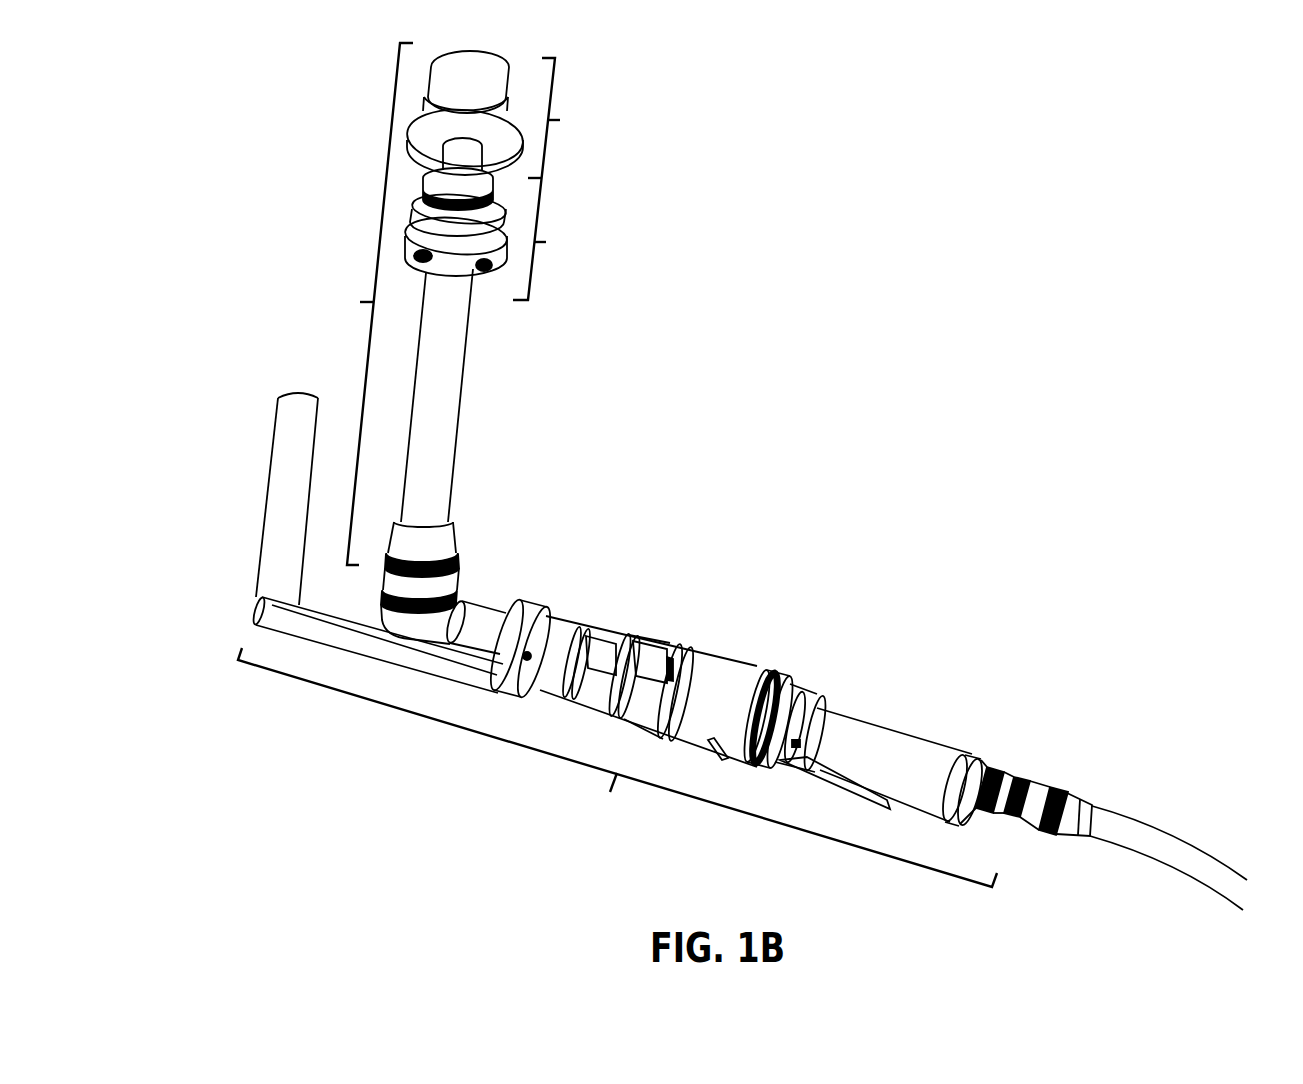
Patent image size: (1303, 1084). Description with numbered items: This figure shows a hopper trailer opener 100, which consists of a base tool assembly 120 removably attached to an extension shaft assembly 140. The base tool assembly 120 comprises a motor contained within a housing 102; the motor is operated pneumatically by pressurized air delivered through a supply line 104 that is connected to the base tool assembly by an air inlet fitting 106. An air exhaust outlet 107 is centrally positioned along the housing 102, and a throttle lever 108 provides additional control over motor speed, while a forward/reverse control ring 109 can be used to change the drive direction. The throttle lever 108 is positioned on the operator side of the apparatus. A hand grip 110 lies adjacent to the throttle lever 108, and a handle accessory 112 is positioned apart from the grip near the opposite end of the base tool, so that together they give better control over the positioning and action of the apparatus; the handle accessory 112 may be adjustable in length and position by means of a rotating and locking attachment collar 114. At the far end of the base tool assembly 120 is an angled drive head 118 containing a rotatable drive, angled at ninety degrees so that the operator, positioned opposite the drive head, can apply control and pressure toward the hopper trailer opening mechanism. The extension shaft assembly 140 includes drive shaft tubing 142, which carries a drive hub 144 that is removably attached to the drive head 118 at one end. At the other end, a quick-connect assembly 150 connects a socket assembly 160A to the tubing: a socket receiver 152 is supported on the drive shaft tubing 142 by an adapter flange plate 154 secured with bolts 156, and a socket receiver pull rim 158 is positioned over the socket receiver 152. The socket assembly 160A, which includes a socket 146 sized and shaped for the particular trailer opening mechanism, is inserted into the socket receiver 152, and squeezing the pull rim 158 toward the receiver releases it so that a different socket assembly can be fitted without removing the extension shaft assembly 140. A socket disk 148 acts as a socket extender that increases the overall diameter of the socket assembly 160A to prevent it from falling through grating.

The hopper trailer opener 100 is at (1066, 250).
The housing 102 is at (705, 652).
The supply line 104 is at (1188, 850).
The air inlet fitting 106 is at (1003, 770).
The air exhaust outlet 107 is at (718, 746).
The throttle lever 108 is at (830, 790).
The forward/reverse control ring 109 is at (782, 680).
The hand grip 110 is at (893, 733).
The handle accessory 112 is at (262, 460).
The attachment collar 114 is at (530, 597).
The angled drive head 118 is at (378, 595).
The base tool assembly 120 is at (617, 767).
The extension shaft assembly 140 is at (351, 304).
The drive shaft tubing 142 is at (466, 373).
The drive hub 144 is at (456, 532).
The socket 146 is at (514, 88).
The socket disk 148 is at (527, 136).
The quick-connect assembly 150 is at (512, 233).
The socket receiver 152 is at (409, 240).
The adapter flange plate 154 is at (409, 257).
The bolts 156 is at (490, 266).
The socket receiver pull rim 158 is at (489, 189).
The socket assembly 160A is at (582, 179).